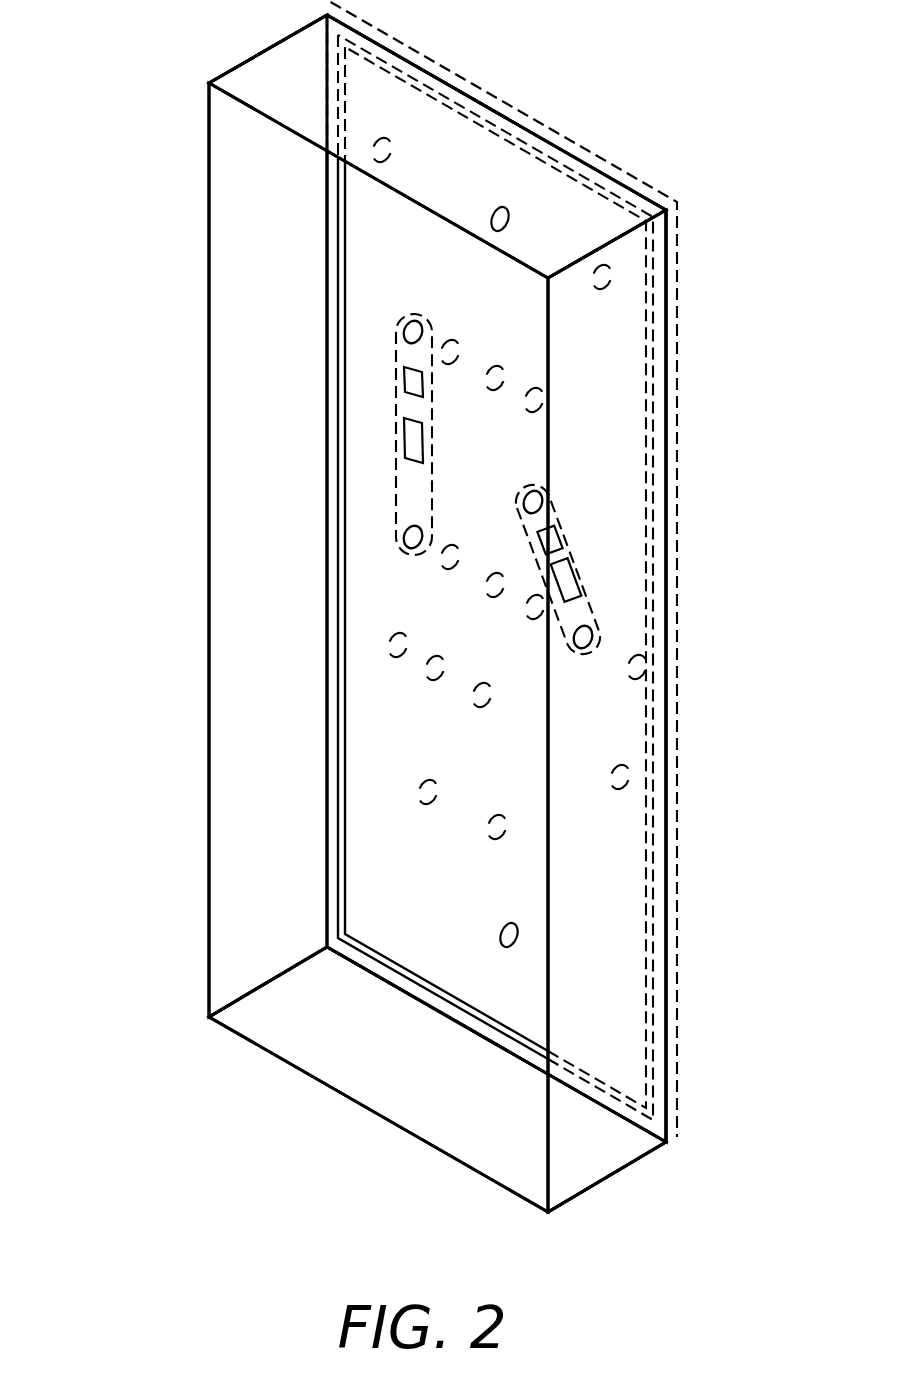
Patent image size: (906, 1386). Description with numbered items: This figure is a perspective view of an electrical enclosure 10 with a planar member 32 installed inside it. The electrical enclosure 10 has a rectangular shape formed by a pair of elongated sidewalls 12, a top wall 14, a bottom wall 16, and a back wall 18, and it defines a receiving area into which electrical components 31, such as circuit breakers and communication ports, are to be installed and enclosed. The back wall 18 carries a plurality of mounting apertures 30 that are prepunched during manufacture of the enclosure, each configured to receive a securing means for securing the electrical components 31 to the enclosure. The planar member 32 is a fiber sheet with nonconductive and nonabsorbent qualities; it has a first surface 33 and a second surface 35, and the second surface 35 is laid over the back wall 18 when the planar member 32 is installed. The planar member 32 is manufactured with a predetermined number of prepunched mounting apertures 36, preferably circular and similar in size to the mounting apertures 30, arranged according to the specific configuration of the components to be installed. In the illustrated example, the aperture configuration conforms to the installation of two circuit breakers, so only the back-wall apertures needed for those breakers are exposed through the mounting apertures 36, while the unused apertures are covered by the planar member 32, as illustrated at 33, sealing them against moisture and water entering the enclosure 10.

The electrical enclosure 10 is at (123, 362).
The elongated sidewalls 12 is at (229, 614).
The top wall 14 is at (455, 160).
The bottom wall 16 is at (423, 1067).
The back wall 18 is at (658, 260).
The mounting apertures 30 is at (405, 332).
The electrical components 31 is at (397, 447).
The planar member 32 is at (615, 167).
The first surface 33 is at (443, 347).
The second surface 35 is at (653, 1005).
The mounting apertures 36 is at (543, 500).